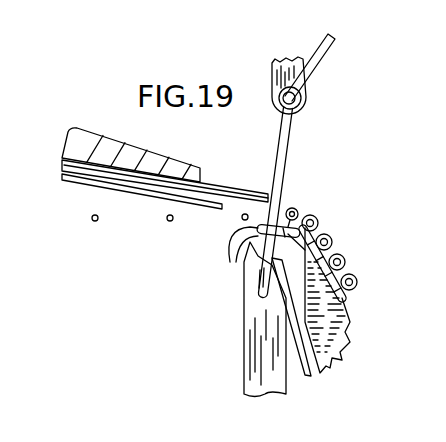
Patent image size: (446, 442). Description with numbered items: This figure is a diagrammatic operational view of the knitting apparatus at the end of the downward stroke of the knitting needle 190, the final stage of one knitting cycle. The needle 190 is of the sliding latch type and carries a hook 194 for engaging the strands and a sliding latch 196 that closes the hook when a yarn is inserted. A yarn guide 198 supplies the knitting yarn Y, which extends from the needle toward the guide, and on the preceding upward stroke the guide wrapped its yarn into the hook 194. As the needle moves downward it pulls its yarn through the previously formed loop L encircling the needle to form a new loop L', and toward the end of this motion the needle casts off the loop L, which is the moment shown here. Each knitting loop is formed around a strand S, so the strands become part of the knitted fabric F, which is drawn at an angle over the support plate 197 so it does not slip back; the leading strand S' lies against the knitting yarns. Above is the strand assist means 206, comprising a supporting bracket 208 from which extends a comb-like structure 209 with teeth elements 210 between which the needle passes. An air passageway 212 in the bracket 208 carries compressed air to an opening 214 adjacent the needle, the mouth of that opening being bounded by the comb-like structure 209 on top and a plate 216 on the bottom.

The knitting needle 190 is at (238, 338).
The hook 194 is at (304, 331).
The sliding latch 196 is at (246, 298).
The support plate 197 is at (338, 337).
The yarn guide 198 is at (276, 63).
The strand assist means 206 is at (197, 205).
The supporting bracket 208 is at (97, 145).
The comb-like structure 209 is at (187, 193).
The teeth elements 210 is at (283, 202).
The air passageway 212 is at (62, 167).
The opening 214 is at (238, 207).
The plate 216 is at (95, 180).
The strand S is at (132, 230).
The leading strand S' is at (314, 205).
The previously formed loop L is at (328, 256).
The new loop L' is at (248, 248).
The knitting yarn Y is at (313, 70).
The knitted fabric F is at (351, 249).